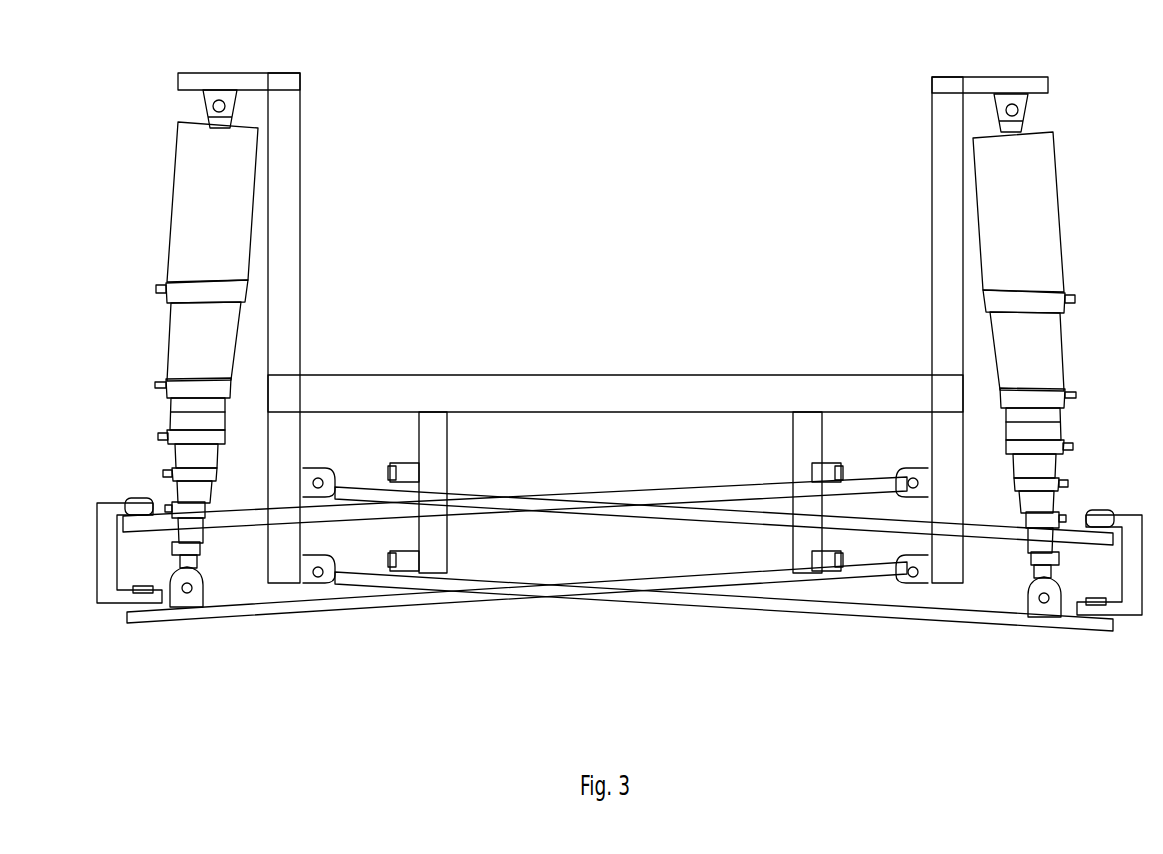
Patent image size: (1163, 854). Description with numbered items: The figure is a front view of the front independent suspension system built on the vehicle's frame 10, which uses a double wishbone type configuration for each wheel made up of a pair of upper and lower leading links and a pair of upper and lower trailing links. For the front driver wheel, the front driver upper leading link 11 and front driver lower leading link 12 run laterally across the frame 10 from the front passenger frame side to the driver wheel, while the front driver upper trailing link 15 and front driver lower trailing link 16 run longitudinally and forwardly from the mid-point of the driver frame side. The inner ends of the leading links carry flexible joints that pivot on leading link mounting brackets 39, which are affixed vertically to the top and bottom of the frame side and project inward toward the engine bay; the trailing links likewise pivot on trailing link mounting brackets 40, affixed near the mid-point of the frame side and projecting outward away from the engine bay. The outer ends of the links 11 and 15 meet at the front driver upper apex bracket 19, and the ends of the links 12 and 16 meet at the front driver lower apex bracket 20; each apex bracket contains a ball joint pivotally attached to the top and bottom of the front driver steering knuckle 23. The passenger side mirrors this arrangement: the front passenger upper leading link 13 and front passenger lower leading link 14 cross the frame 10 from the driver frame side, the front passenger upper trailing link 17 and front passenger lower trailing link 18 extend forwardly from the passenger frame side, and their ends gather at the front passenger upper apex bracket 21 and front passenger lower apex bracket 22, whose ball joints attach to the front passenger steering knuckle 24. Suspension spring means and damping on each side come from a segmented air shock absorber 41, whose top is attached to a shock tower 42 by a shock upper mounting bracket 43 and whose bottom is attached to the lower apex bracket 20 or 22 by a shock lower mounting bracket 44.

The frame 10 is at (615, 396).
The front driver upper leading link 11 is at (492, 488).
The front driver lower leading link 12 is at (737, 600).
The front passenger upper leading link 13 is at (753, 483).
The front passenger lower leading link 14 is at (490, 593).
The front driver upper trailing link 15 is at (1058, 428).
The front driver lower trailing link 16 is at (963, 597).
The front passenger upper trailing link 17 is at (188, 412).
The front passenger lower trailing link 18 is at (260, 593).
The front driver upper apex bracket 19 is at (1128, 515).
The front driver lower apex bracket 20 is at (1072, 633).
The front passenger upper apex bracket 21 is at (105, 503).
The front passenger lower apex bracket 22 is at (160, 613).
The front driver steering knuckle 23 is at (1127, 617).
The front passenger steering knuckle 24 is at (108, 590).
The leading link mounting brackets 39 is at (322, 468).
The trailing link mounting brackets 40 is at (403, 463).
The segmented air shock absorber 41 is at (195, 240).
The shock tower 42 is at (237, 77).
The shock upper mounting bracket 43 is at (215, 100).
The shock lower mounting bracket 44 is at (197, 597).